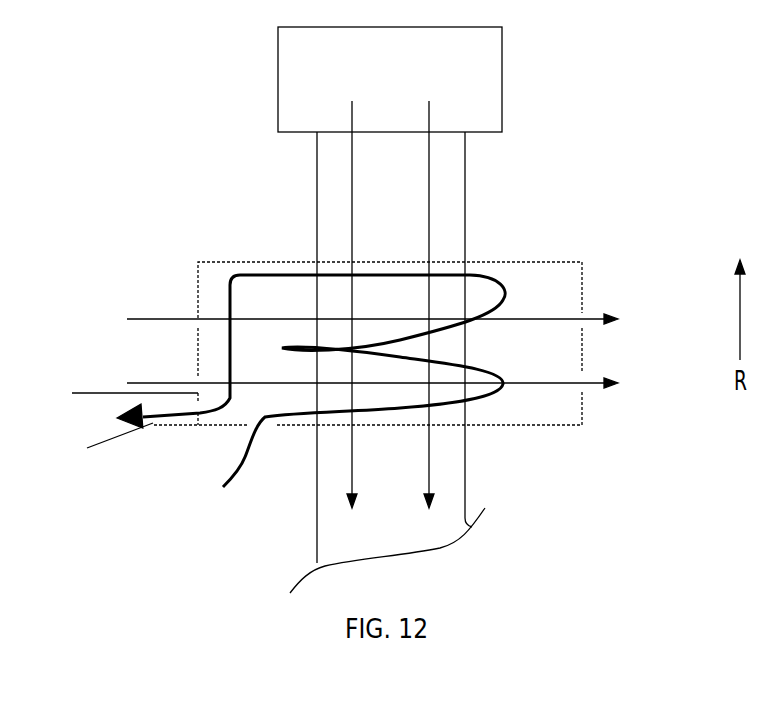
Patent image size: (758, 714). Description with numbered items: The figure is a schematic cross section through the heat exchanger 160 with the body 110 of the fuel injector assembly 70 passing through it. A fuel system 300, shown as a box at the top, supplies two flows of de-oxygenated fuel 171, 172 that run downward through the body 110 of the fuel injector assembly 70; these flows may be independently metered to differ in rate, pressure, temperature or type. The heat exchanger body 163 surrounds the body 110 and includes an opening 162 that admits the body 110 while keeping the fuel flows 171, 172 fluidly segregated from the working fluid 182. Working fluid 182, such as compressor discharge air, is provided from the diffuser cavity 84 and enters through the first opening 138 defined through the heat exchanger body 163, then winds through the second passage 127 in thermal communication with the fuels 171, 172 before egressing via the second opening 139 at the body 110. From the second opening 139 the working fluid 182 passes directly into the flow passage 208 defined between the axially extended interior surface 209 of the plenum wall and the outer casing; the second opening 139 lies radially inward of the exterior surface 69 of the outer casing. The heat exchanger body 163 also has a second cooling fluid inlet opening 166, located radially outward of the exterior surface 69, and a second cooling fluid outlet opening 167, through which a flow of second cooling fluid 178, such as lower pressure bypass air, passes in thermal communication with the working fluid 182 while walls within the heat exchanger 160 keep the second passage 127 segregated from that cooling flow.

The fuel system 300 is at (406, 91).
The flow of fuel 171 is at (352, 202).
The flow of fuel 172 is at (429, 203).
The body 110 is at (465, 225).
The fuel injector assembly 70 is at (467, 458).
The heat exchanger 160 is at (528, 262).
The opening 162 is at (476, 256).
The heat exchanger body 163 is at (557, 252).
The second cooling fluid inlet opening 166 is at (186, 375).
The second cooling fluid outlet opening 167 is at (590, 300).
The second cooling fluid 178 is at (158, 318).
The exterior surface 69 is at (95, 385).
The working fluid 182 is at (263, 275).
The second passage 127 is at (256, 405).
The flow passage 208 is at (115, 431).
The interior surface 209 is at (120, 453).
The second opening 139 is at (188, 418).
The first opening 138 is at (267, 436).
The diffuser cavity 84 is at (207, 576).